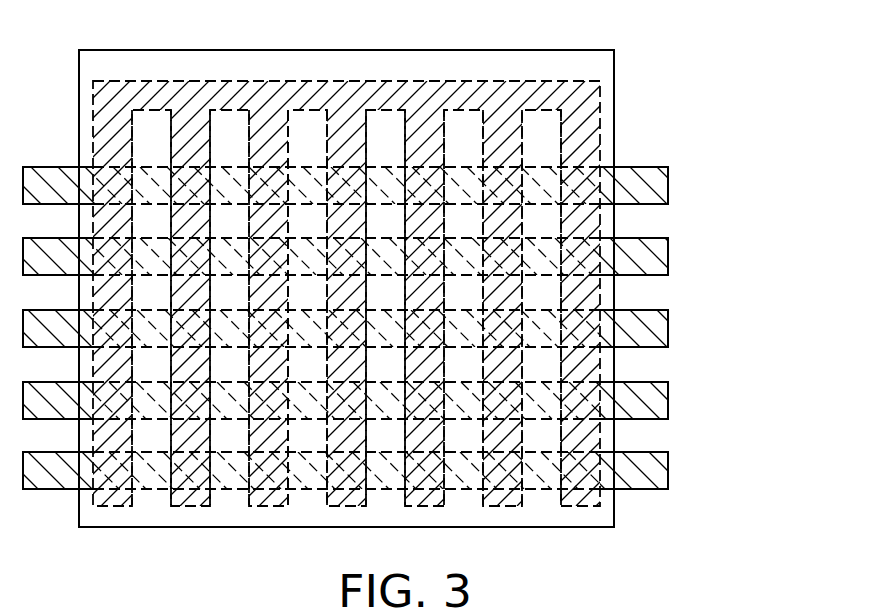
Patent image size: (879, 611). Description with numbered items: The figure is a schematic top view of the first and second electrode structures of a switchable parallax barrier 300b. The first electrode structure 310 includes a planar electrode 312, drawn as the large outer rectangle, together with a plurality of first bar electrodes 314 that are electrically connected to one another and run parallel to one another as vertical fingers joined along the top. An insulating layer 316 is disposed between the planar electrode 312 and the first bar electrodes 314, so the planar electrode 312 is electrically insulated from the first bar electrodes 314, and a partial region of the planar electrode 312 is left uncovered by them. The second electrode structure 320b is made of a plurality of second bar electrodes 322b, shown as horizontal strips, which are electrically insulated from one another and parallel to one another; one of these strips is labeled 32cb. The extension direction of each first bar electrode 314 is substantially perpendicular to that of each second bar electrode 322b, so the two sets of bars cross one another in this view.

The switchable parallax barrier 300b is at (439, 307).
The first electrode structure 310 is at (439, 265).
The planar electrode 312 is at (550, 63).
The first bar electrodes 314 is at (603, 87).
The insulating layer 316 is at (407, 289).
The second electrode structure 320b is at (420, 328).
The second bar electrodes 322b is at (652, 250).
The strip electrode 32cb is at (652, 317).